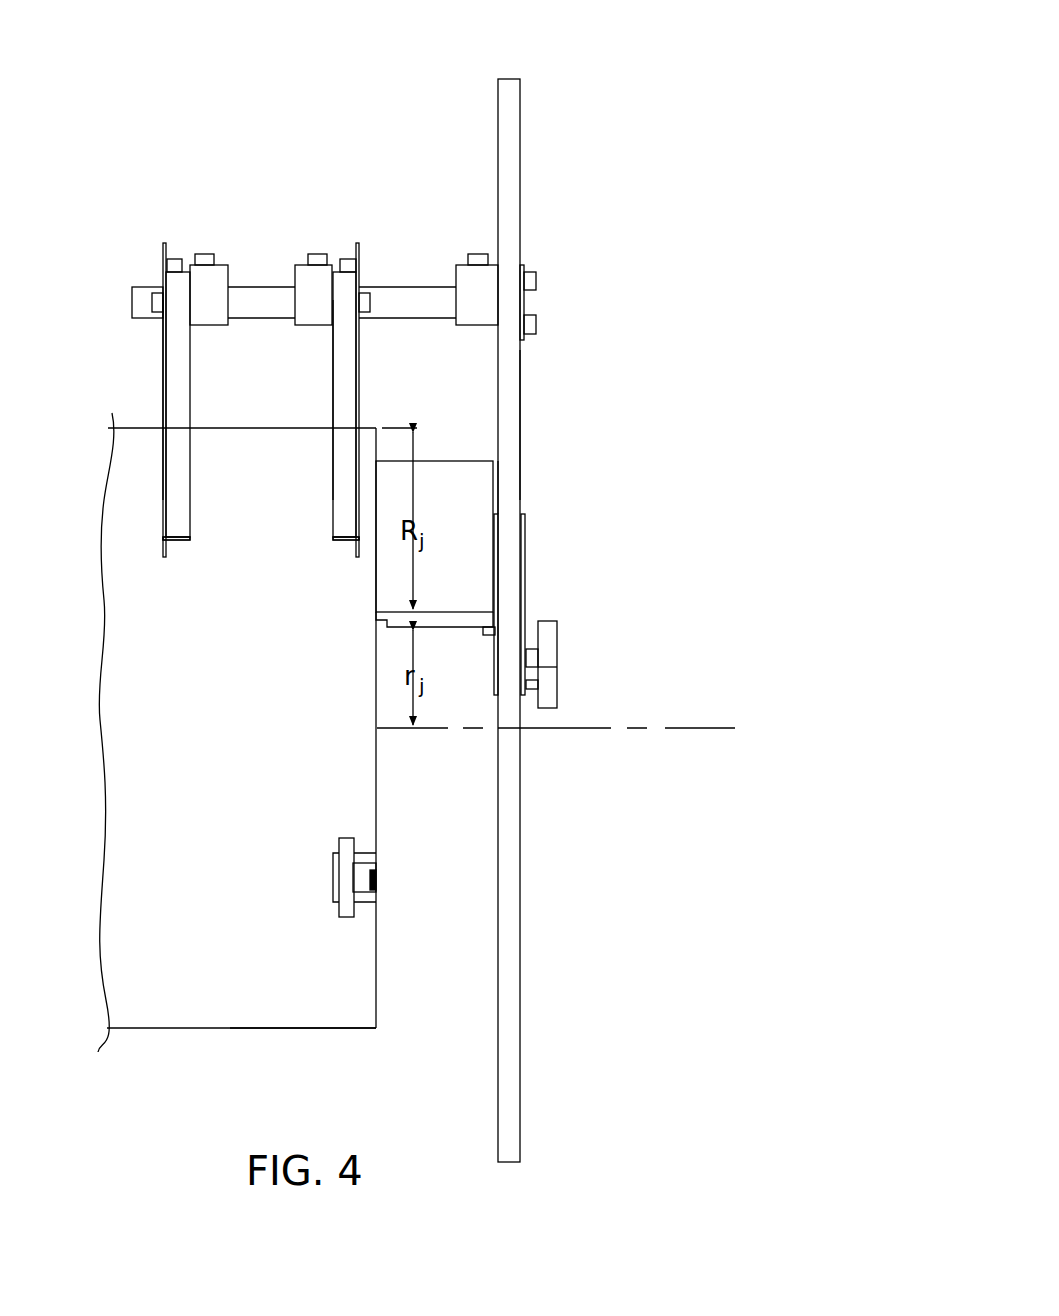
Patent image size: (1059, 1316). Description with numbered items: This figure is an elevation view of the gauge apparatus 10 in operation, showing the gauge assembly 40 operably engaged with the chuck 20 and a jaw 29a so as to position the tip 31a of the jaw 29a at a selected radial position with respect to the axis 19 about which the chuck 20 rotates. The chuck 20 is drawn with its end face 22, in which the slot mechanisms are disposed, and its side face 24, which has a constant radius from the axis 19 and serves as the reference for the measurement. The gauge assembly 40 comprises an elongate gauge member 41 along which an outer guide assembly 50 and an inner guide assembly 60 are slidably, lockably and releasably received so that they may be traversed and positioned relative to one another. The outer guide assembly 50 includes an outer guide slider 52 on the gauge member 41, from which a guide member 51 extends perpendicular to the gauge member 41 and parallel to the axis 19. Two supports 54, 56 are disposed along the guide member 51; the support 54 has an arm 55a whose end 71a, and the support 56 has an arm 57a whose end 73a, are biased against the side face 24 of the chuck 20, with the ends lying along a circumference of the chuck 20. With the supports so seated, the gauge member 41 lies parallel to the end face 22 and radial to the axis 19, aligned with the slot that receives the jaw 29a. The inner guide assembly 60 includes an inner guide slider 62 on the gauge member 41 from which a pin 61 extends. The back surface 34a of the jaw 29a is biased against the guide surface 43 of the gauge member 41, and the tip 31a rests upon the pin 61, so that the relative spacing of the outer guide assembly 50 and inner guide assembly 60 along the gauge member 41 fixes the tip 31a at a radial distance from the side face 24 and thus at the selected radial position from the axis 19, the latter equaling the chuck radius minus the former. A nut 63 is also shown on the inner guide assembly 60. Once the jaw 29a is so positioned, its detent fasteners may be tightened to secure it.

The gauge apparatus 10 is at (645, 52).
The axis 19 is at (668, 728).
The chuck 20 is at (205, 1010).
The end face 22 is at (376, 945).
The side face 24 is at (292, 1010).
The jaw 29a is at (468, 483).
The tip 31a is at (433, 630).
The back surface 34a is at (494, 572).
The gauge assembly 40 is at (508, 115).
The gauge member 41 is at (515, 383).
The guide surface 43 is at (497, 490).
The outer guide assembly 50 is at (414, 297).
The guide member 51 is at (262, 297).
The outer guide slider 52 is at (530, 305).
The support 54 is at (352, 386).
The arm 55a is at (335, 495).
The support 56 is at (178, 352).
The arm 57a is at (178, 442).
The inner guide assembly 60 is at (530, 688).
The pin 61 is at (490, 637).
The inner guide slider 62 is at (527, 633).
The nut 63 is at (550, 655).
The end 71a is at (345, 541).
The end 73a is at (178, 541).